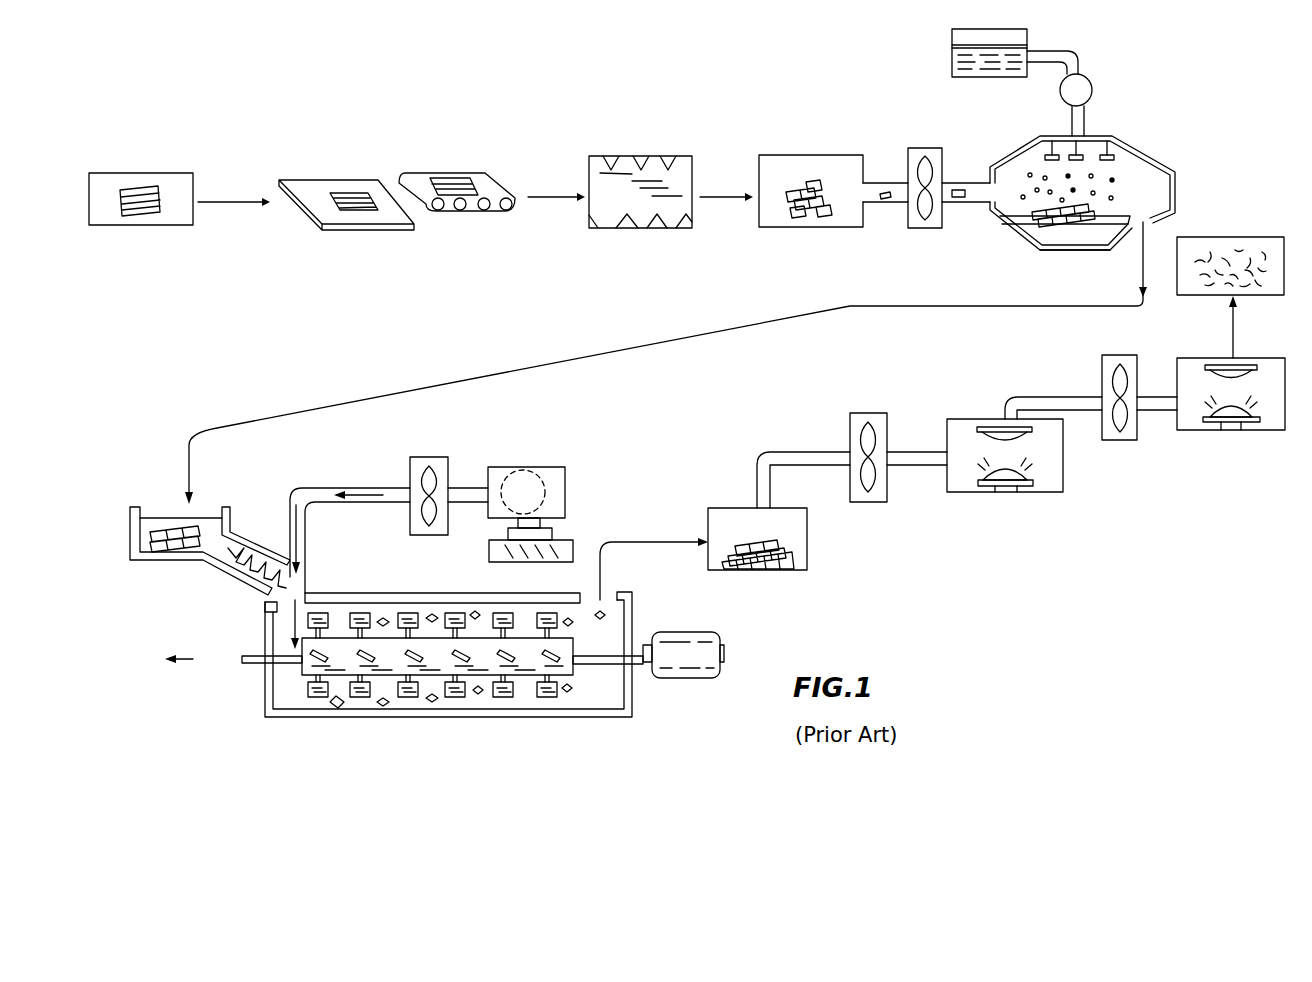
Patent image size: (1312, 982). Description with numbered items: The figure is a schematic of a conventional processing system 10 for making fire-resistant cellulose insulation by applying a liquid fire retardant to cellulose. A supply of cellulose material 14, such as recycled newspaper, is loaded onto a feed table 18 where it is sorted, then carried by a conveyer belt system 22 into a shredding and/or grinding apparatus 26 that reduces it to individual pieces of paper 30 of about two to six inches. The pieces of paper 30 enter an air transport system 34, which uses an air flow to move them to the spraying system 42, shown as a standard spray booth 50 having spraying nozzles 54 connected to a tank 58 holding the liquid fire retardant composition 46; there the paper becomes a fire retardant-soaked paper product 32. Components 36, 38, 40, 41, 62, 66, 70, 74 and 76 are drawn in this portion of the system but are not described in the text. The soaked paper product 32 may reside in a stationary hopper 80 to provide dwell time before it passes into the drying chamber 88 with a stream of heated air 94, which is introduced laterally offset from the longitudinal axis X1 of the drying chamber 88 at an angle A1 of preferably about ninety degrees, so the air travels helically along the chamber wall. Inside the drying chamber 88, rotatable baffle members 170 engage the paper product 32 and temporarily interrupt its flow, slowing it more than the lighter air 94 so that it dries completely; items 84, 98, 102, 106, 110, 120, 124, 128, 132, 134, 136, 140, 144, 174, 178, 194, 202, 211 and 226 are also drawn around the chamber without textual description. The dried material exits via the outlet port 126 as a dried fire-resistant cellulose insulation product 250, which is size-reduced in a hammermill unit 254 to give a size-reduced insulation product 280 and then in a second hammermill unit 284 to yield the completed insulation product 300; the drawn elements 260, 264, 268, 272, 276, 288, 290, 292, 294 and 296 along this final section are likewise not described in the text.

The processing system 10 is at (484, 108).
The cellulose material 14 is at (140, 186).
The feed table 18 is at (289, 178).
The conveyer belt system 22 is at (416, 172).
The shredding and/or grinding apparatus 26 is at (645, 155).
The individual pieces of paper 30 is at (795, 192).
The fire retardant-soaked paper product 32 is at (1065, 224).
The air transport system 34 is at (947, 182).
The return duct 36 is at (897, 205).
The outlet 38 is at (870, 180).
The spray chamber 40 is at (986, 177).
The blower 41 is at (925, 156).
The spraying system 42 is at (1018, 237).
The liquid fire retardant composition 46 is at (952, 58).
The spray booth 50 is at (1038, 250).
The spraying nozzles 54 is at (1114, 158).
The tank 58 is at (952, 32).
The supply line 62 is at (1066, 51).
The tank outlet 66 is at (1032, 46).
The feed pipe 70 is at (1085, 136).
The pump 74 is at (1093, 88).
The droplets 76 is at (1023, 198).
The stationary hopper 80 is at (190, 563).
The feed screw 84 is at (265, 560).
The drying chamber 88 is at (470, 596).
The stream of heated air 94 is at (360, 488).
The housing bottom 98 is at (290, 718).
The housing wall 102 is at (632, 715).
The screw flights 106 is at (422, 718).
The barrel wall 110 is at (470, 718).
The housing 120 is at (280, 703).
The inlet port 124 is at (265, 607).
The outlet port 126 is at (606, 592).
The plate 128 is at (312, 597).
The recirculation duct 132 is at (318, 488).
The heater unit 134 is at (488, 480).
The heating element 136 is at (540, 473).
The base 140 is at (573, 548).
The blower 144 is at (430, 457).
The baffle members 170 is at (503, 613).
The heater stem 174 is at (525, 650).
The heater lead 178 is at (583, 680).
The extruder shaft 194 is at (252, 664).
The coupling 202 is at (635, 648).
The barrel segment 211 is at (378, 718).
The motor 226 is at (712, 634).
The dried fire-resistant cellulose insulation product 250 is at (776, 565).
The hammermill unit 254 is at (1012, 492).
The duct 260 is at (788, 452).
The duct segment 264 is at (815, 452).
The collection box 268 is at (756, 508).
The duct inlet 272 is at (946, 465).
The blower 276 is at (868, 413).
The size-reduced insulation product 280 is at (1040, 475).
The hammermill unit 284 is at (1255, 358).
The duct 288 is at (1055, 397).
The duct bend 290 is at (1030, 397).
The chamber top 292 is at (1000, 420).
The chamber inlet 294 is at (1173, 385).
The blower 296 is at (1118, 355).
The completed insulation product 300 is at (1245, 245).
The longitudinal axis X1 is at (190, 660).
The angle of air introduction A1 is at (268, 648).